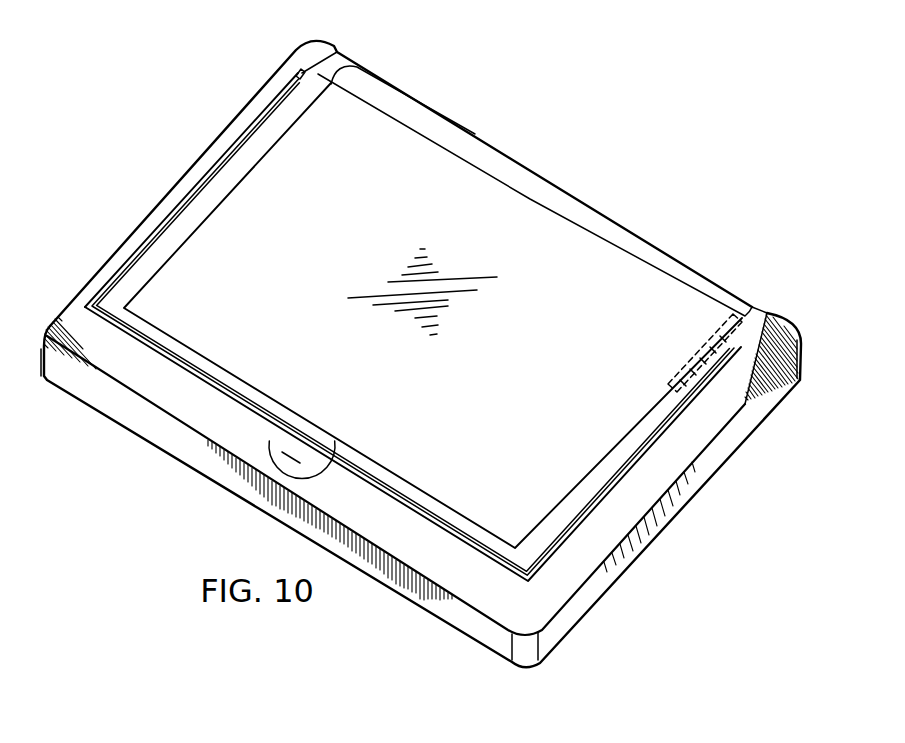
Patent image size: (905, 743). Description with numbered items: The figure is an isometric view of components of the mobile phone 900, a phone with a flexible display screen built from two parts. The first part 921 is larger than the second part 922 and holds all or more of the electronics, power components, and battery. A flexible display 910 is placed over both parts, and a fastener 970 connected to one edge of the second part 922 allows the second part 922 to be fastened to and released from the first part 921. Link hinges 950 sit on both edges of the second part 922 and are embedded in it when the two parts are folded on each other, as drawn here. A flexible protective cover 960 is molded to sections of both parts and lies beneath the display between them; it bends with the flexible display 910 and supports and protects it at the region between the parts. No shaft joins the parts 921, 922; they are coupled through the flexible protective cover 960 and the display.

The mobile phone 900 is at (509, 113).
The flexible display 910 is at (487, 397).
The first part 921 is at (165, 450).
The second part 922 is at (198, 205).
The link hinges 950 is at (686, 362).
The flexible protective cover 960 is at (272, 155).
The fastener 970 is at (300, 450).